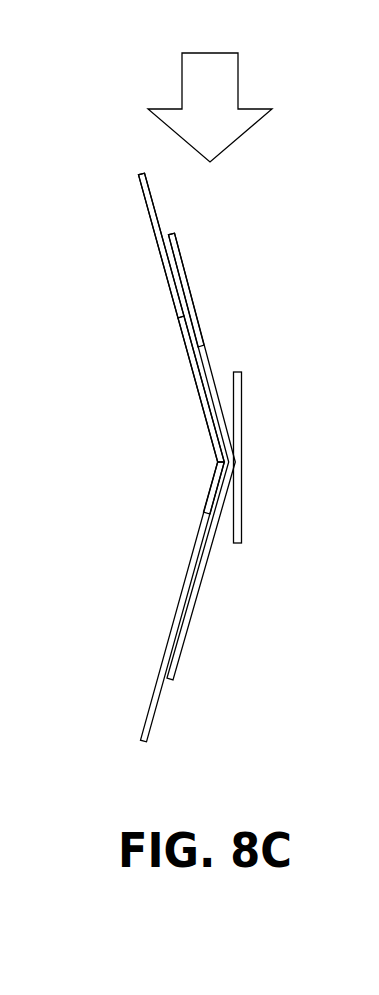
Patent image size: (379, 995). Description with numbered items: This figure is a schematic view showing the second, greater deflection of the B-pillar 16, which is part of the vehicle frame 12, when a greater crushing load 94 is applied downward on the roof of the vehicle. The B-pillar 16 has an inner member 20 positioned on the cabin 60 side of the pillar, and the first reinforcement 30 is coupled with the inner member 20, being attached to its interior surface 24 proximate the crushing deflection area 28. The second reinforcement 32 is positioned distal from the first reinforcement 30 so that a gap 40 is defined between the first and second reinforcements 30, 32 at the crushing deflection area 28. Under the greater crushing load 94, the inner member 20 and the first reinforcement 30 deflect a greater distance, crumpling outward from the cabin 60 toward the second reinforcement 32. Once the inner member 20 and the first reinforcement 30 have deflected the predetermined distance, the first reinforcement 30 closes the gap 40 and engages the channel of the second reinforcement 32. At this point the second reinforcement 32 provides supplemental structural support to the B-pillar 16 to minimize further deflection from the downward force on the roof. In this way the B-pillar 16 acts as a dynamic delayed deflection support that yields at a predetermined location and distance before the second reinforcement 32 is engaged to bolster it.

The frame 12 is at (109, 181).
The B-pillar 16 is at (122, 714).
The inner member 20 is at (155, 230).
The interior surface 24 is at (152, 203).
The crushing deflection area 28 is at (206, 517).
The first reinforcement 30 is at (195, 292).
The second reinforcement 32 is at (242, 420).
The gap 40 is at (228, 518).
The cabin 60 is at (157, 471).
The greater crushing load 94 is at (225, 88).